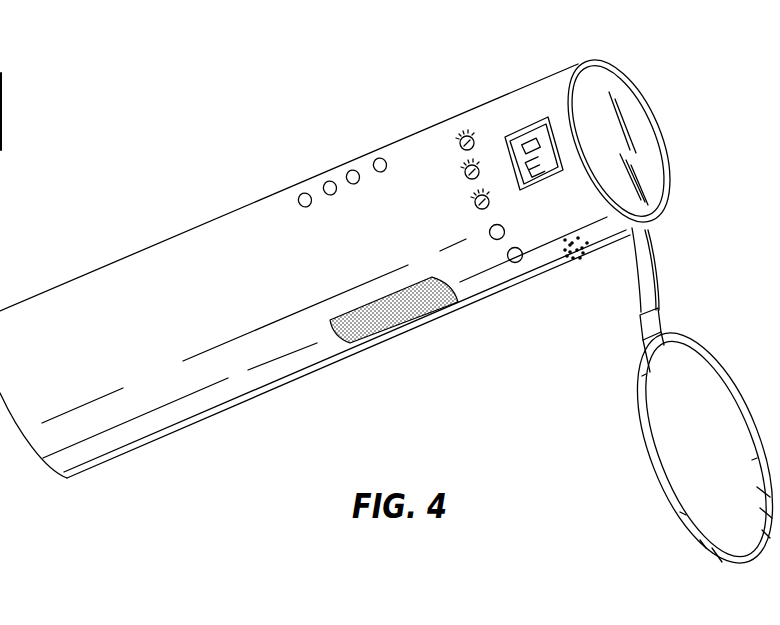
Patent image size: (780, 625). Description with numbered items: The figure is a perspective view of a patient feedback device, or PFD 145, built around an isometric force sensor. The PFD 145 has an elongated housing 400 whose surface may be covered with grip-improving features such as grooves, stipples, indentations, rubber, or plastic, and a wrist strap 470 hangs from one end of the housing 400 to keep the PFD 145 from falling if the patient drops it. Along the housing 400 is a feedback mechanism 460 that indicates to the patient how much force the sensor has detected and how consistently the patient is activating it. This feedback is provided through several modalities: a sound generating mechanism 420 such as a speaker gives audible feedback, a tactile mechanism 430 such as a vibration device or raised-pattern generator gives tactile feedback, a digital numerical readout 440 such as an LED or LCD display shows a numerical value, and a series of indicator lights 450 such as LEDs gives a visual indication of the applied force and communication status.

The housing 400 is at (555, 85).
The PFD 145 is at (165, 468).
The sound generating mechanism 420 is at (566, 260).
The tactile mechanism 430 is at (408, 312).
The digital numerical readout 440 is at (527, 127).
The indicator lights 450 is at (287, 197).
The feedback mechanism 460 is at (513, 273).
The wrist strap 470 is at (642, 412).